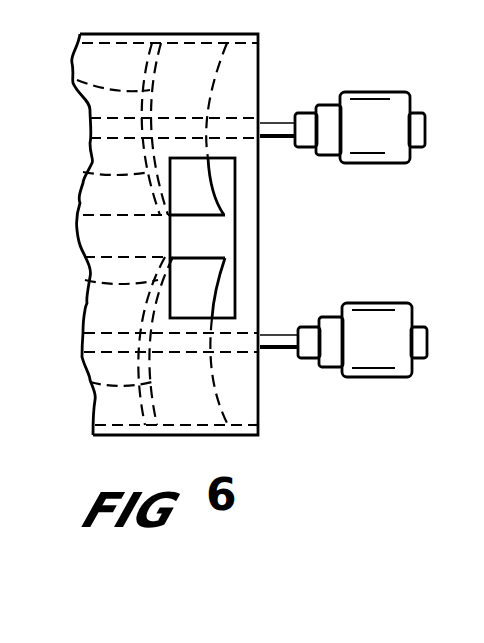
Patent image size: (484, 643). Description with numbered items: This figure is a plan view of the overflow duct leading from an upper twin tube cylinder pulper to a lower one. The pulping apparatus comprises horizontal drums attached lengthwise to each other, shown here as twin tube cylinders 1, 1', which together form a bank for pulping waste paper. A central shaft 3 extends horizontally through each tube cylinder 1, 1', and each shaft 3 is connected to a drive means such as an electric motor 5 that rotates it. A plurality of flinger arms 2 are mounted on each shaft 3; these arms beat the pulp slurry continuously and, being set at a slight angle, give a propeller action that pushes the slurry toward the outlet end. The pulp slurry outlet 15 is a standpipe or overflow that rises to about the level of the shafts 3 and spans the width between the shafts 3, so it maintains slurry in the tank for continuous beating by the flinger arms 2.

The twin tube cylinder 1 is at (165, 218).
The twin tube cylinder 1' is at (278, 389).
The flinger arms 2 is at (68, 96).
The central shaft 3 is at (279, 125).
The electric motor 5 is at (390, 102).
The pulp slurry outlet 15 is at (237, 228).